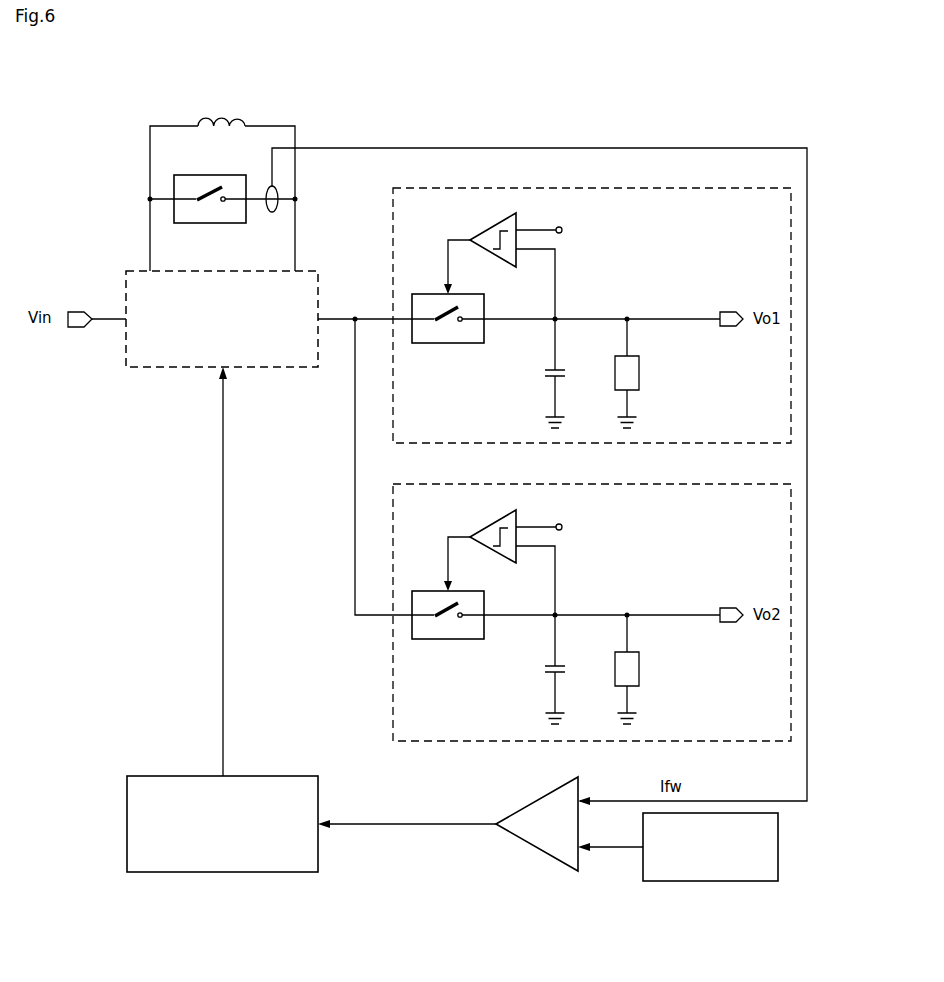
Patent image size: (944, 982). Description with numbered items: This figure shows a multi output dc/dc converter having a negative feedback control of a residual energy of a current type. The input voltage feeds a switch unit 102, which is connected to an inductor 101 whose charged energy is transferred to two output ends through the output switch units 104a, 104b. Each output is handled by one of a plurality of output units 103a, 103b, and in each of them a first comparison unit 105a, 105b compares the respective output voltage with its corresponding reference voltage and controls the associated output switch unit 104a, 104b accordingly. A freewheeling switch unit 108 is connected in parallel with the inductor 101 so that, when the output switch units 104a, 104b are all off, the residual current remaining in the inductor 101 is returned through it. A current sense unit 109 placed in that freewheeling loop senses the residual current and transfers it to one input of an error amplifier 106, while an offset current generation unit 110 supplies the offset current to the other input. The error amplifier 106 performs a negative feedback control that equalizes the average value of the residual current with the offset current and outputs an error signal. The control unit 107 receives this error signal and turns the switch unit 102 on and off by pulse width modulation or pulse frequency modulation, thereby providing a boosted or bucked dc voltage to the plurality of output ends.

The inductor 101 is at (228, 116).
The switch unit 102 is at (146, 367).
The output unit 103a is at (600, 188).
The output unit 103b is at (793, 565).
The output switch unit 104a is at (447, 345).
The output switch unit 104b is at (447, 641).
The first comparison unit 105a is at (490, 226).
The first comparison unit 105b is at (490, 523).
The error amplifier 106 is at (535, 850).
The control unit 107 is at (148, 872).
The freewheeling switch unit 108 is at (174, 184).
The current sense unit 109 is at (278, 205).
The offset current generation unit 110 is at (708, 881).